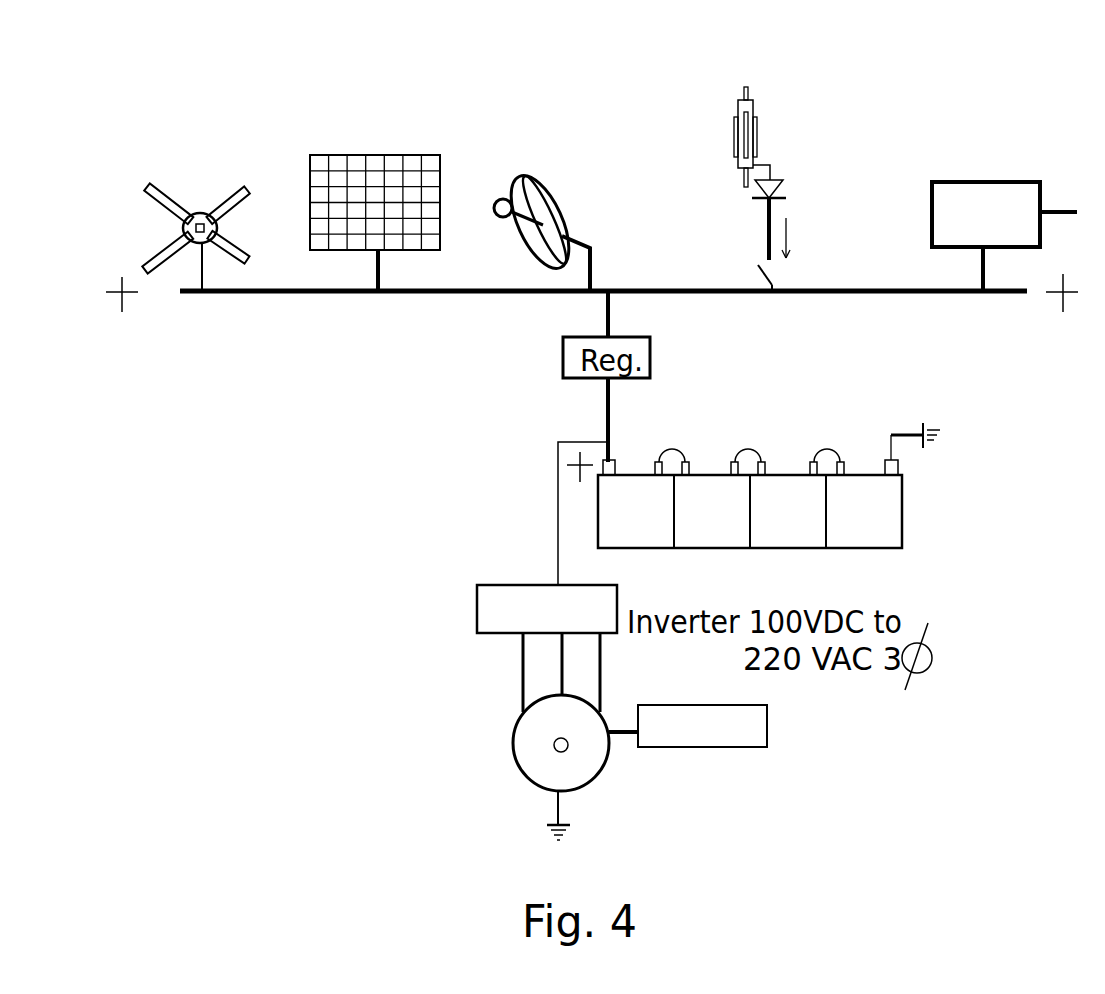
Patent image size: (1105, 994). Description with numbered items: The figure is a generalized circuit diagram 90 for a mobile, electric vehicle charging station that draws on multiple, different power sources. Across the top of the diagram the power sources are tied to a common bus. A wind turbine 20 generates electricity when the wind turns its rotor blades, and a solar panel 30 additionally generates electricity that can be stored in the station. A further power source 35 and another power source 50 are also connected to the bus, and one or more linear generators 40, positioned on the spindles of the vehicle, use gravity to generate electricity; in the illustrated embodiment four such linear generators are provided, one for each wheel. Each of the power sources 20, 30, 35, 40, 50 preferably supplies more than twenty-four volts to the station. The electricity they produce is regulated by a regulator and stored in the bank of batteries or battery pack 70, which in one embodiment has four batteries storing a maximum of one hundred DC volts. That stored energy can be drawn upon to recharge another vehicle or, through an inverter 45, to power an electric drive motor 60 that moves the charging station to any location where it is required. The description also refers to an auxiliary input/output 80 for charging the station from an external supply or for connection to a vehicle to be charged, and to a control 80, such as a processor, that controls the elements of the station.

The generalized circuit diagram 90 is at (86, 183).
The wind turbine 20 is at (195, 213).
The solar panel 30 is at (418, 155).
The power source 35 is at (568, 177).
The linear generator 40 is at (730, 130).
The power source 50 is at (997, 182).
The battery pack 70 is at (902, 520).
The inverter 45 is at (477, 607).
The electric drive motor 60 is at (518, 767).
The auxiliary input/output 80 is at (767, 733).